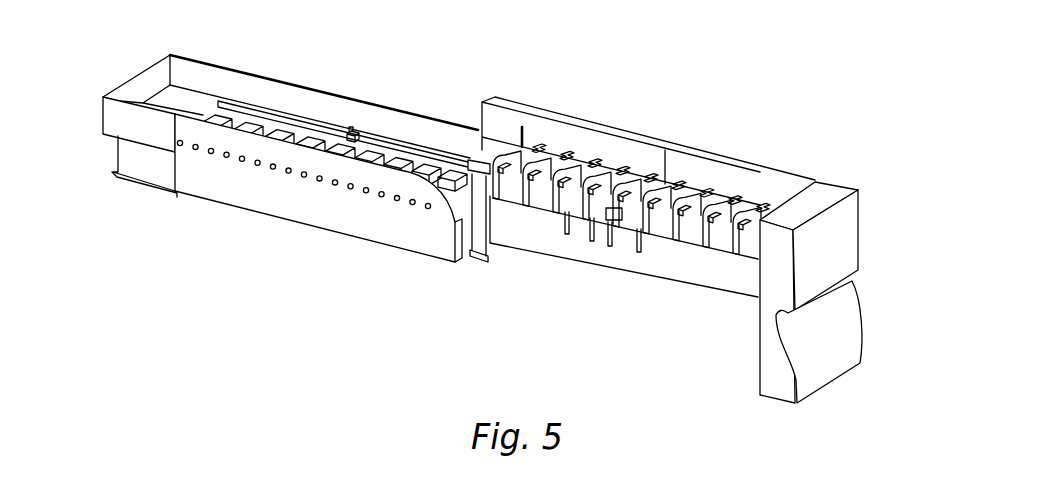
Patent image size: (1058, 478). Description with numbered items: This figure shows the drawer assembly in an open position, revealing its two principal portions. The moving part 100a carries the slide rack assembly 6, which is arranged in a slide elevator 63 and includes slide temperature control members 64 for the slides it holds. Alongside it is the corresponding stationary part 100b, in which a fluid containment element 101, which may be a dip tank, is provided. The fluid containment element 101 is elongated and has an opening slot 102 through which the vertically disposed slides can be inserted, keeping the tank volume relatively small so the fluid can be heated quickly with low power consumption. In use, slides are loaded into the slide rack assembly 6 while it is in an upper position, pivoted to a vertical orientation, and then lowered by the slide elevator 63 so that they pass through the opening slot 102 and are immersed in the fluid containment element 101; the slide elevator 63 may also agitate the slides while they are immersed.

The slide rack assembly 6 is at (700, 178).
The slide elevator 63 is at (573, 143).
The slide temperature control members 64 is at (315, 137).
The moving part 100a is at (830, 182).
The stationary part 100b is at (275, 203).
The fluid containment element 101 is at (468, 198).
The opening slot 102 is at (353, 136).